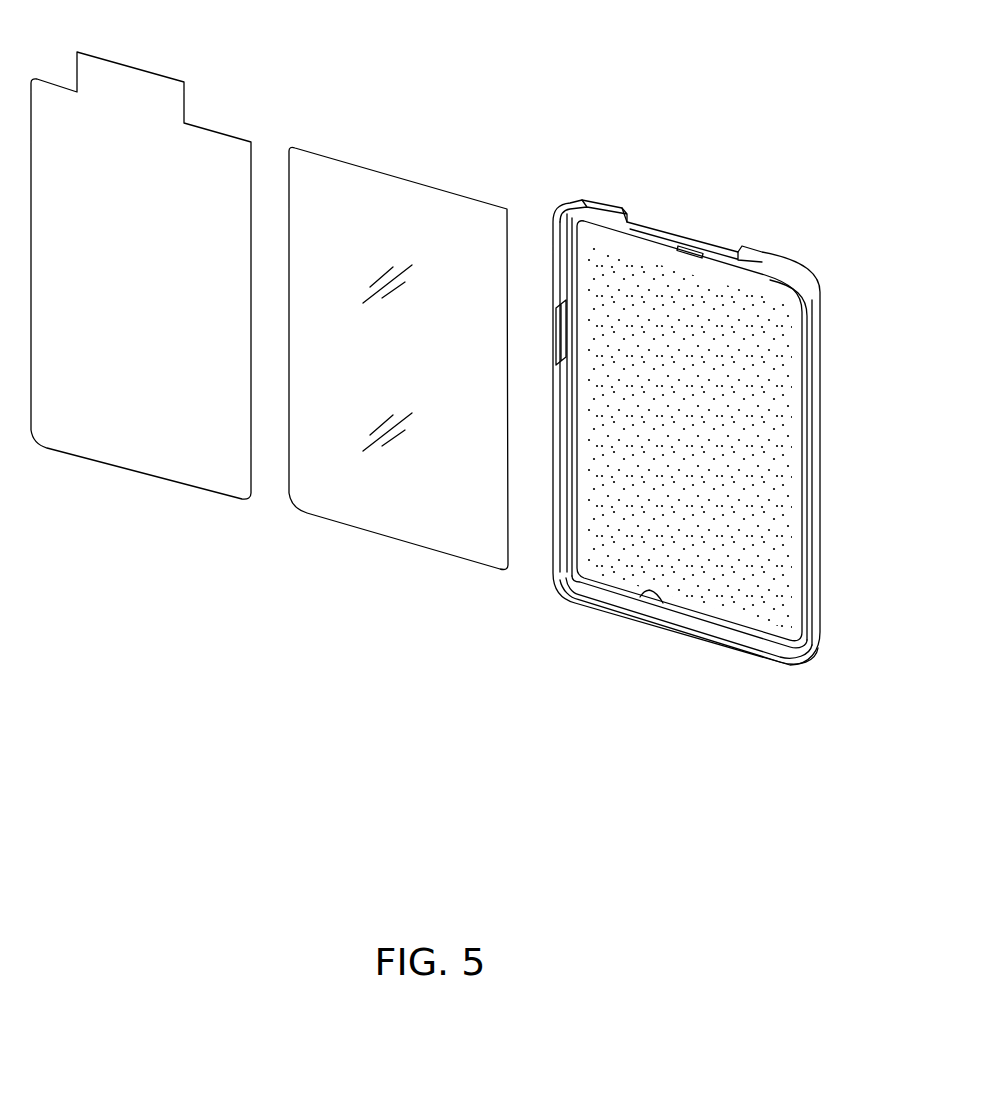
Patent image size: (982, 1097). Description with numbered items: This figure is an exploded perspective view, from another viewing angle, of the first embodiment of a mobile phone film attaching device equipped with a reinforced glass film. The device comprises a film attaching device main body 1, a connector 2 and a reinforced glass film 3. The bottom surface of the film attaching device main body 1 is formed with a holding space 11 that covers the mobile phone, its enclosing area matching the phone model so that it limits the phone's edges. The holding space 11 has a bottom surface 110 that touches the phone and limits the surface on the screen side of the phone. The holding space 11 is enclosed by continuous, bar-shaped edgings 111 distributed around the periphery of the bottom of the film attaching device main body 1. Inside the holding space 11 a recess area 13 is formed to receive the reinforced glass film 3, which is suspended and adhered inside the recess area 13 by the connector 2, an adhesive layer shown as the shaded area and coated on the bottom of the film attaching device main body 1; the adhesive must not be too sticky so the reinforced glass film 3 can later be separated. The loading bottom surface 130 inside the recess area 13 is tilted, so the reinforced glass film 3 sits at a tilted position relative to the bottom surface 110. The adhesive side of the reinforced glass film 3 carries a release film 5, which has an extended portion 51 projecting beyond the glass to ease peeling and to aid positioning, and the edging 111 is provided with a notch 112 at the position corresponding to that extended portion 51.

The film attaching device main body 1 is at (705, 416).
The holding space 11 is at (796, 313).
The bottom surface 110 is at (563, 578).
The edgings 111 is at (812, 405).
The notch 112 is at (662, 232).
The recess area 13 is at (605, 577).
The loading bottom surface 130 is at (650, 590).
The connector 2 is at (748, 330).
The reinforced glass film 3 is at (412, 207).
The release film 5 is at (150, 256).
The extended portion 51 is at (145, 92).